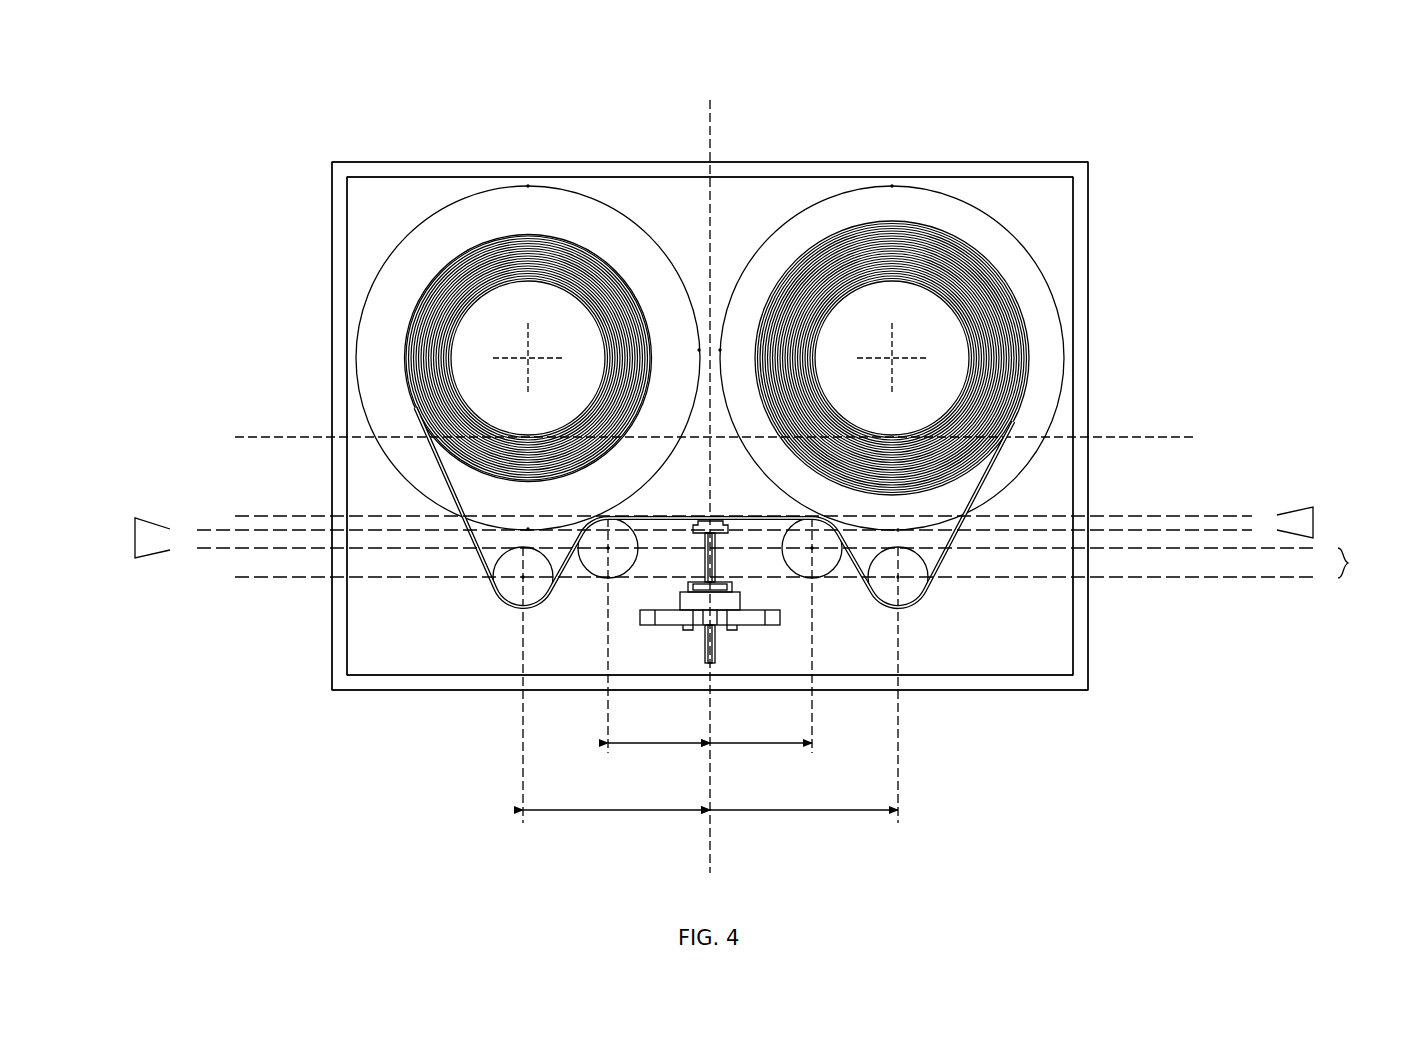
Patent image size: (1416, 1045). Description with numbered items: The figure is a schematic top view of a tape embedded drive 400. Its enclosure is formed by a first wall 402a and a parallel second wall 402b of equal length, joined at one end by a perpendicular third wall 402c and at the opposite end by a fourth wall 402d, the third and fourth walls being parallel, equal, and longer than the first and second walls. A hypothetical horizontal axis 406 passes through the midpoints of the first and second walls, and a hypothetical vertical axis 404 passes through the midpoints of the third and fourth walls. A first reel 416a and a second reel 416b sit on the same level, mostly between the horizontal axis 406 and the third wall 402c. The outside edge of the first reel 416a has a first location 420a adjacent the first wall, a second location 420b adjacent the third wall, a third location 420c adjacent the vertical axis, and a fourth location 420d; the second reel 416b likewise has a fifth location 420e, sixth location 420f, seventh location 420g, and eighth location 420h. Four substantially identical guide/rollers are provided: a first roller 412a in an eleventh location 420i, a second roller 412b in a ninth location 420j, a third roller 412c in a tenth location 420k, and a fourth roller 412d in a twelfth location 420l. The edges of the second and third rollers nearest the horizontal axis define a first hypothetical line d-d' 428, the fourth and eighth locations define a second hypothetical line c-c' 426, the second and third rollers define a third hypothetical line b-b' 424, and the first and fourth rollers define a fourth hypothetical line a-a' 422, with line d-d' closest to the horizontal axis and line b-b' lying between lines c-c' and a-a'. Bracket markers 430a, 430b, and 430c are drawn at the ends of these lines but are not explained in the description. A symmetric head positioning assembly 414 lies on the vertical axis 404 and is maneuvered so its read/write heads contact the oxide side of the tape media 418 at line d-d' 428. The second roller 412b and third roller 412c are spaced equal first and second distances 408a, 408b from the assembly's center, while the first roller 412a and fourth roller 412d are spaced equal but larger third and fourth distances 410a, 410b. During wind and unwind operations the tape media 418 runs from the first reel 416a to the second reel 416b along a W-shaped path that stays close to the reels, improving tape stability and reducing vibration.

The tape embedded drive 400 is at (178, 85).
The first wall 402a is at (330, 395).
The second wall 402b is at (1090, 388).
The third wall 402c is at (645, 160).
The fourth wall 402d is at (500, 692).
The hypothetical vertical axis 404 is at (713, 825).
The hypothetical horizontal axis 406 is at (1160, 437).
The first distance 408a is at (660, 747).
The second distance 408b is at (770, 747).
The third distance 410a is at (617, 813).
The fourth distance 410b is at (820, 813).
The first guide/roller 412a is at (517, 600).
The second guide/roller 412b is at (602, 570).
The third guide/roller 412c is at (803, 570).
The fourth guide/roller 412d is at (905, 610).
The head positioning assembly 414 is at (684, 632).
The first reel 416a is at (524, 354).
The second reel 416b is at (896, 354).
The tape media 418 is at (992, 466).
The first location 420a is at (355, 358).
The second location 420b is at (526, 183).
The third location 420c is at (697, 348).
The fourth location 420d is at (527, 528).
The fifth location 420e is at (1068, 355).
The sixth location 420f is at (893, 183).
The seventh location 420g is at (722, 346).
The eighth location 420h is at (899, 536).
The eleventh location 420i is at (518, 580).
The ninth location 420j is at (612, 553).
The tenth location 420k is at (815, 553).
The twelfth location 420l is at (904, 583).
The fourth hypothetical line a-a' 422 is at (287, 578).
The third hypothetical line b-b' 424 is at (207, 552).
The second hypothetical line c-c' 426 is at (210, 528).
The first hypothetical line d-d' 428 is at (259, 514).
The line group 430a is at (1317, 522).
The line group 430b is at (135, 538).
The line group 430c is at (1348, 563).